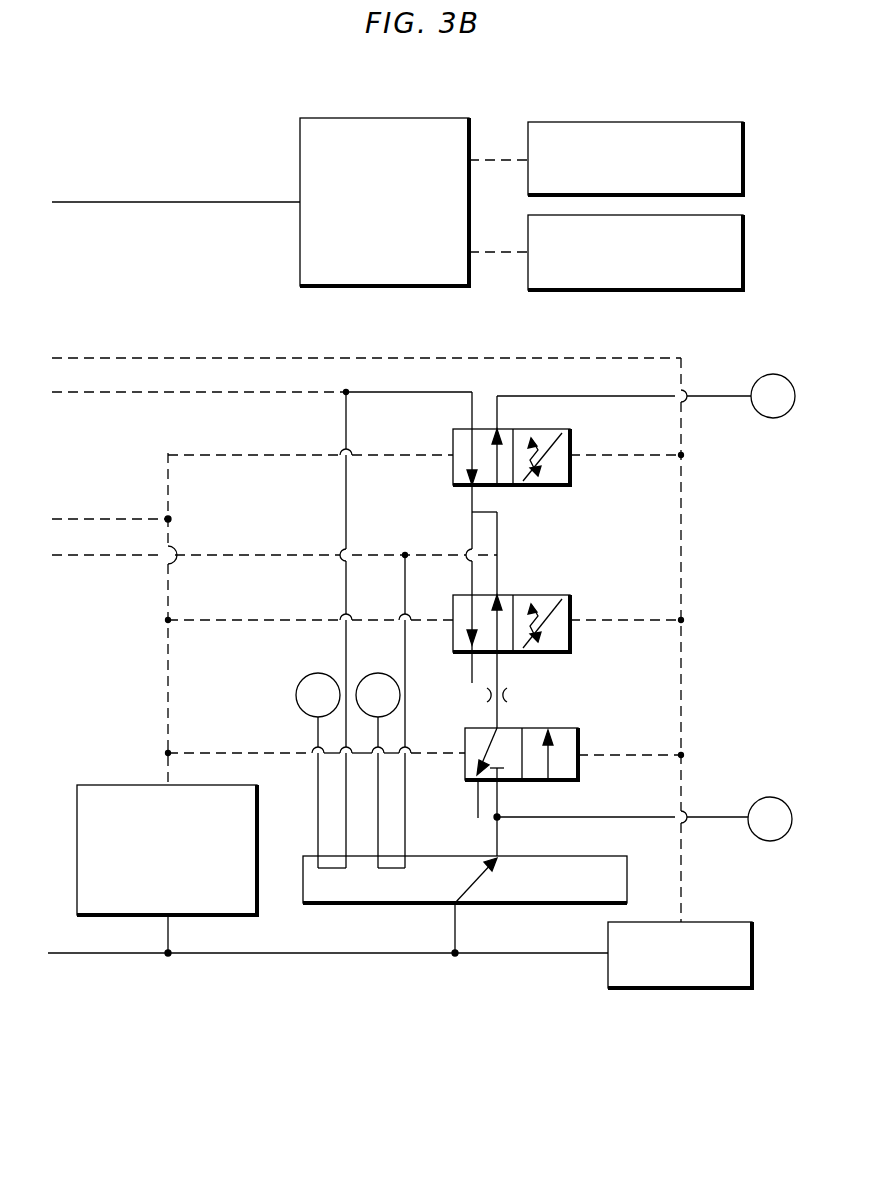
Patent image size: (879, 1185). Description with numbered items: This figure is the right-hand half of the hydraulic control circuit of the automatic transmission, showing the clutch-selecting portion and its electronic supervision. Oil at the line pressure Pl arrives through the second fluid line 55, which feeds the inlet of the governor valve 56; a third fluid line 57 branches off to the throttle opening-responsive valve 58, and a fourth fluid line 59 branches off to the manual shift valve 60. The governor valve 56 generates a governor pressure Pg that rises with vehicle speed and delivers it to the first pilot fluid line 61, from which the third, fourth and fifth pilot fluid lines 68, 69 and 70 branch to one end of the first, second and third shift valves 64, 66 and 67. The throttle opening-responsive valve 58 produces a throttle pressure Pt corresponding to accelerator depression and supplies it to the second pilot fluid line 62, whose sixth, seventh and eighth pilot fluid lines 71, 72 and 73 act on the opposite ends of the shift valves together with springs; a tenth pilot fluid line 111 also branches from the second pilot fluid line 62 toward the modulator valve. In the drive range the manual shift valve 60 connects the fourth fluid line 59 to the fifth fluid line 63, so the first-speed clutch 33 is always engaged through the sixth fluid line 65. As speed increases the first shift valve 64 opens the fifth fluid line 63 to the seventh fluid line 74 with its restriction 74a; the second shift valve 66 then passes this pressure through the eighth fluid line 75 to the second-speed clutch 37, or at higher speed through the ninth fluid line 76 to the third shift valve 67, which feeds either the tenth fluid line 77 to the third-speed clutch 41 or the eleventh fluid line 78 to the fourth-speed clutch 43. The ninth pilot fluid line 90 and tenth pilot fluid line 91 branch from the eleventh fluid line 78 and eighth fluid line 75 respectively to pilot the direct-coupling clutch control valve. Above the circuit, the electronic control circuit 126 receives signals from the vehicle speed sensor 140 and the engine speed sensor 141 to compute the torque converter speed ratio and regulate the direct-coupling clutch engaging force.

The electronic control circuit 126 is at (458, 118).
The vehicle speed sensor 140 is at (706, 122).
The engine speed sensor 141 is at (728, 291).
The third-speed clutch 41 is at (774, 374).
The first pilot fluid line 61 is at (256, 358).
The governor pressure Pg is at (408, 358).
The ninth pilot fluid line 90 is at (285, 393).
The tenth fluid line 77 is at (572, 396).
The eleventh fluid line 78 is at (408, 393).
The third shift valve 67 is at (572, 447).
The eighth pilot fluid line 73 is at (286, 456).
The fifth pilot fluid line 70 is at (655, 457).
The throttle pressure Pt is at (97, 519).
The tenth pilot fluid line 111 is at (140, 519).
The second pilot fluid line 62 is at (170, 696).
The ninth fluid line 76 is at (470, 526).
The tenth pilot fluid line 91 is at (285, 557).
The second shift valve 66 is at (572, 610).
The seventh pilot fluid line 72 is at (276, 622).
The fourth pilot fluid line 69 is at (636, 622).
The fourth-speed clutch 43 is at (328, 675).
The second-speed clutch 37 is at (390, 675).
The eighth fluid line 75 is at (406, 656).
The seventh fluid line 74 is at (498, 664).
The restriction 74a is at (504, 694).
The first shift valve 64 is at (580, 728).
The sixth pilot fluid line 71 is at (290, 755).
The third pilot fluid line 68 is at (640, 757).
The throttle opening-responsive valve 58 is at (140, 785).
The fifth fluid line 63 is at (496, 836).
The sixth fluid line 65 is at (588, 819).
The first-speed clutch 33 is at (772, 841).
The manual shift valve 60 is at (564, 903).
The fourth fluid line 59 is at (456, 936).
The third fluid line 57 is at (168, 937).
The second fluid line 55 is at (298, 955).
The line pressure Pl is at (205, 955).
The governor valve 56 is at (608, 988).